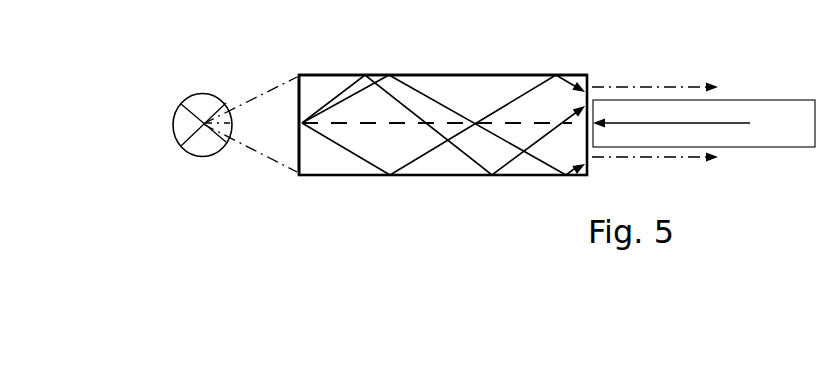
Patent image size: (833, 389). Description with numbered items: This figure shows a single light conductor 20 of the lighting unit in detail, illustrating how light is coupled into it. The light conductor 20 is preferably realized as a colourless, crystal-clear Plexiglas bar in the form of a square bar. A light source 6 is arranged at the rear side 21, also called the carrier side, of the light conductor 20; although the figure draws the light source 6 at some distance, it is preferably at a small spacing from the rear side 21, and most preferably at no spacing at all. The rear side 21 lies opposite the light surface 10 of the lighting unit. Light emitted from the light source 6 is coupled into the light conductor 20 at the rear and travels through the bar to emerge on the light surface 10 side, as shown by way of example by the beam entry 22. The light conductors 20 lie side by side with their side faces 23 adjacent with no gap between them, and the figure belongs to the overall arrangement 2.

The lighting arrangement 2 is at (517, 90).
The light source 6 is at (190, 93).
The light surface 10 is at (704, 123).
The light conductor 20 is at (327, 66).
The rear side 21 is at (290, 155).
The beam entry 22 is at (434, 164).
The side face 23 is at (473, 66).